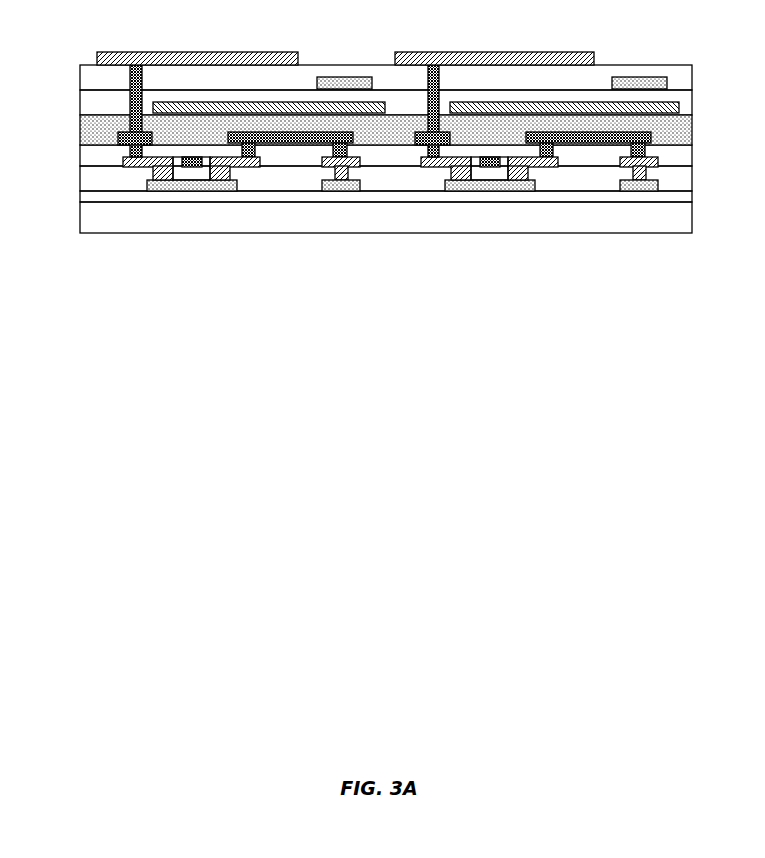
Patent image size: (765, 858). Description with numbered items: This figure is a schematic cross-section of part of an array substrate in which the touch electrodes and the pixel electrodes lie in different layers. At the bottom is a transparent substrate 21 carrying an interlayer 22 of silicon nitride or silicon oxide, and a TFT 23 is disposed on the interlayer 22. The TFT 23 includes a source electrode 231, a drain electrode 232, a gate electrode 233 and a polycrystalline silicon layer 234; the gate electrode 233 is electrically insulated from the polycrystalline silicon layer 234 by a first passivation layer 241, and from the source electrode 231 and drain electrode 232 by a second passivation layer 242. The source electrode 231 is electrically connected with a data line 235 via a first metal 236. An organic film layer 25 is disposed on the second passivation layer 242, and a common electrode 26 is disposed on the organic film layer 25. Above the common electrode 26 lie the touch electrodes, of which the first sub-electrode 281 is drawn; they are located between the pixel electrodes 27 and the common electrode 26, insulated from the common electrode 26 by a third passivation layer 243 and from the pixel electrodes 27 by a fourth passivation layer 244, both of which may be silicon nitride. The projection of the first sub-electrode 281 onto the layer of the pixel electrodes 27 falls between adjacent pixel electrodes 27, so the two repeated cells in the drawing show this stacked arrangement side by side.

The transparent substrate 21 is at (93, 220).
The interlayer 22 is at (93, 200).
The TFT 23 is at (332, 222).
The source electrode 231 is at (228, 170).
The drain electrode 232 is at (153, 188).
The gate electrode 233 is at (186, 169).
The polycrystalline silicon layer 234 is at (340, 209).
The data line 235 is at (339, 168).
The first metal 236 is at (289, 146).
The first passivation layer 241 is at (93, 179).
The second passivation layer 242 is at (93, 156).
The third passivation layer 243 is at (93, 102).
The fourth passivation layer 244 is at (93, 77).
The organic film layer 25 is at (93, 128).
The common electrode 26 is at (305, 108).
The pixel electrodes 27 is at (230, 52).
The first sub-electrode 281 is at (342, 80).